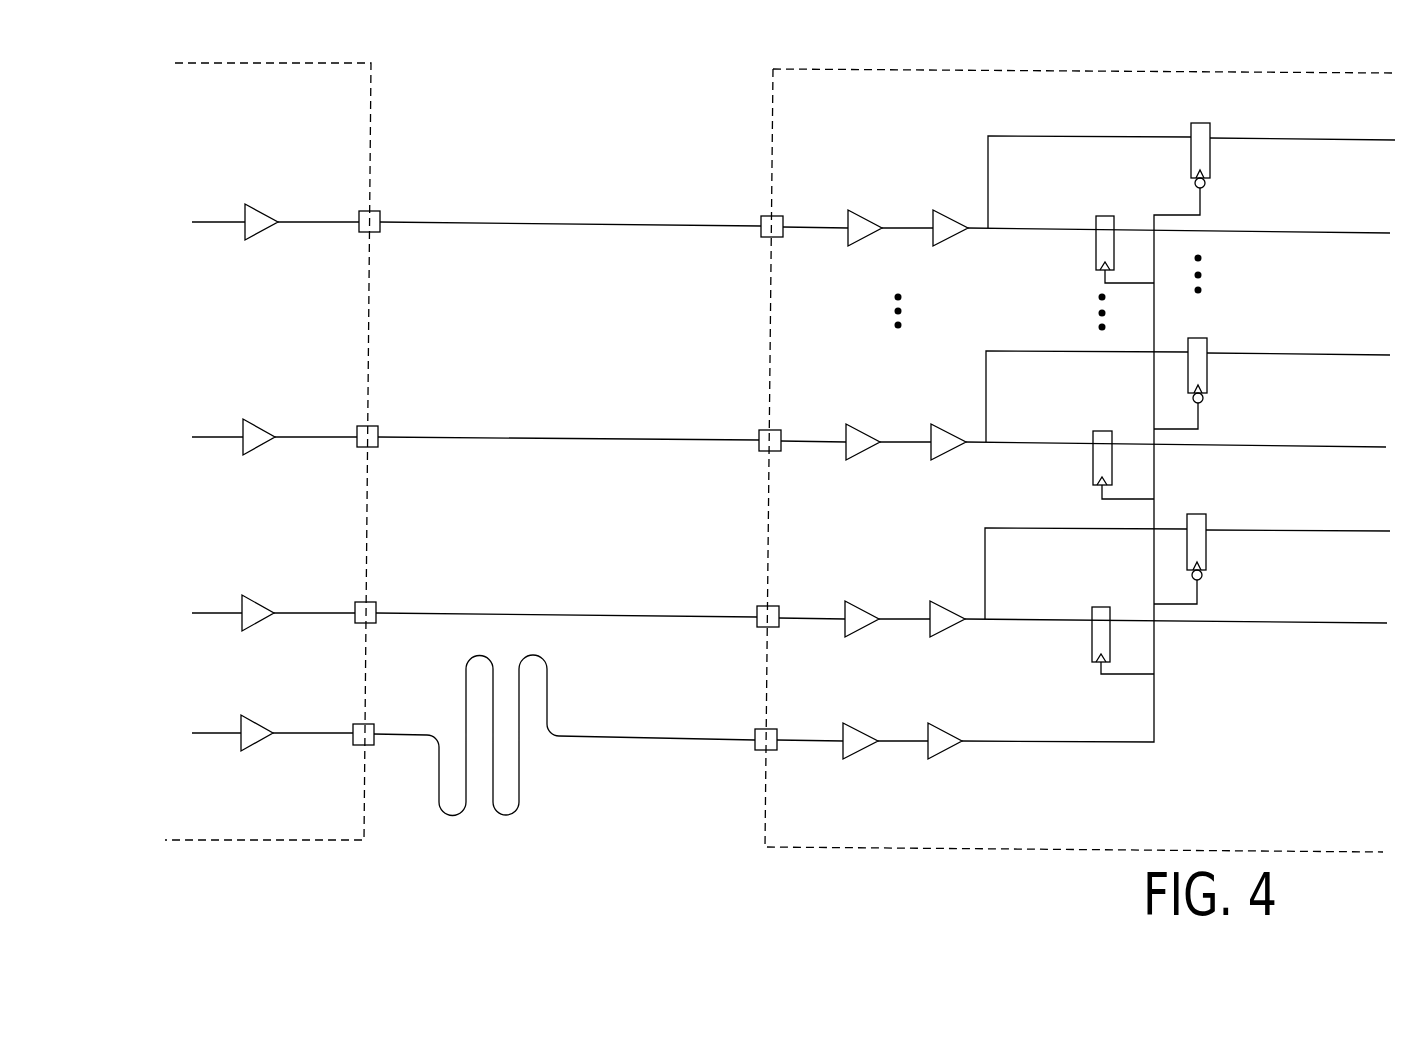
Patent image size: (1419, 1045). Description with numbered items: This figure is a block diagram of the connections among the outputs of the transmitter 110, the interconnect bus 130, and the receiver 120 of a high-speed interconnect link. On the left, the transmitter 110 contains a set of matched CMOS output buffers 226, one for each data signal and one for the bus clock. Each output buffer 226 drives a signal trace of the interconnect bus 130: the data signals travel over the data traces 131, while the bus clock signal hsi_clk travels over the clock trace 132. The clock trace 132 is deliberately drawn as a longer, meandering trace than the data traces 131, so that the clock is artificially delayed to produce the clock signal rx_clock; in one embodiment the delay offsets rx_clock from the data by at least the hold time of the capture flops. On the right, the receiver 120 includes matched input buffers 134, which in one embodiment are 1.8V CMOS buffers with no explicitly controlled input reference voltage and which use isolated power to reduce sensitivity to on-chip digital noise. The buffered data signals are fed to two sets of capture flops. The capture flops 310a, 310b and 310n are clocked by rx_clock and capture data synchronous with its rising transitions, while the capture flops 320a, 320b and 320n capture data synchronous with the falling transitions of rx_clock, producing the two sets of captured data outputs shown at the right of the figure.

The transmitter 110 is at (338, 110).
The receiver 120 is at (840, 118).
The interconnect bus 130 is at (618, 146).
The data traces 131 is at (606, 224).
The clock trace 132 is at (604, 740).
The input buffers 134 is at (932, 222).
The CMOS output buffers 226 is at (262, 212).
The capture flop 310n is at (1097, 216).
The capture flop 310b is at (1098, 431).
The capture flop 310a is at (1097, 607).
The capture flop 320n is at (1200, 122).
The capture flop 320b is at (1198, 338).
The capture flop 320a is at (1195, 514).